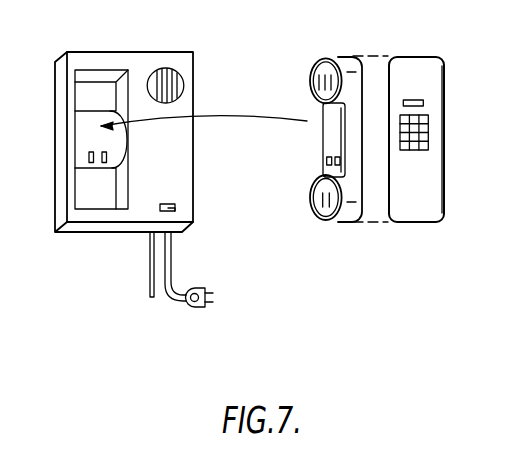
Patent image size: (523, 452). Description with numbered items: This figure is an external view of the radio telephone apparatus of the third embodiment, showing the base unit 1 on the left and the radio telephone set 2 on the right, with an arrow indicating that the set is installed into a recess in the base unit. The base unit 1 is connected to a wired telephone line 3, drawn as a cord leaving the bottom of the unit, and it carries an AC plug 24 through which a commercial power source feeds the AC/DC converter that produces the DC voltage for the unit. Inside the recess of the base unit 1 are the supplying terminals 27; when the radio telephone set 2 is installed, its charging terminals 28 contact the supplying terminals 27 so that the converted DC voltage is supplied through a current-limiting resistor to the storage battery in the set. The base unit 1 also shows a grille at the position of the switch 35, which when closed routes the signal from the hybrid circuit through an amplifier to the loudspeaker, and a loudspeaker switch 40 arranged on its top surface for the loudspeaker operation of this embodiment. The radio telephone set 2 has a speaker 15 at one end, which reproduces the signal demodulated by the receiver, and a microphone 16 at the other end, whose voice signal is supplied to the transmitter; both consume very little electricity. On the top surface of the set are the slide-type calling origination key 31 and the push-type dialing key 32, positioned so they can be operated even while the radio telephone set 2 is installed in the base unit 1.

The base unit 1 is at (115, 51).
The radio telephone set 2 is at (350, 56).
The wired telephone line 3 is at (150, 261).
The speaker 15 is at (323, 63).
The microphone 16 is at (325, 212).
The AC plug 24 is at (202, 308).
The supplying terminals 27 is at (88, 154).
The charging terminals 28 is at (330, 158).
The calling origination key 31 is at (424, 103).
The dialing key 32 is at (429, 134).
The switch 35 is at (170, 72).
The loudspeaker switch 40 is at (176, 205).